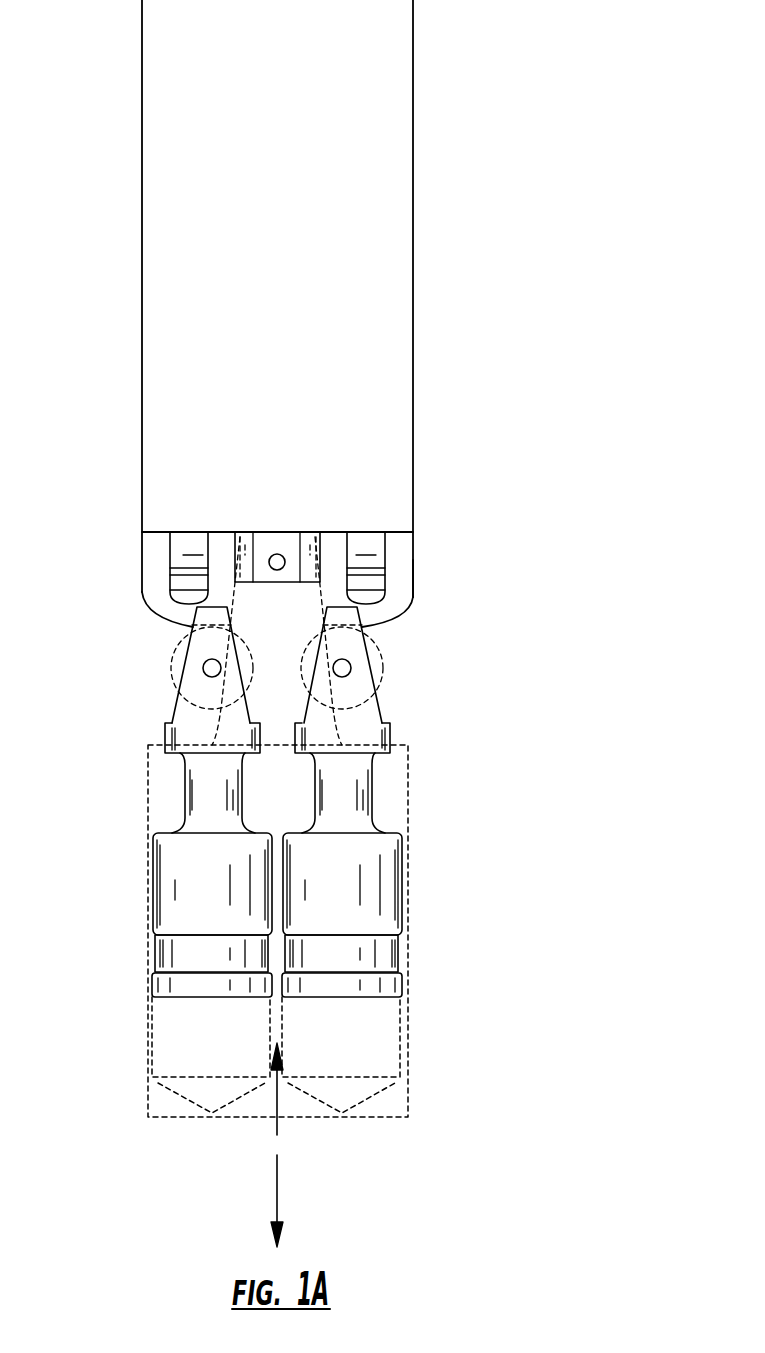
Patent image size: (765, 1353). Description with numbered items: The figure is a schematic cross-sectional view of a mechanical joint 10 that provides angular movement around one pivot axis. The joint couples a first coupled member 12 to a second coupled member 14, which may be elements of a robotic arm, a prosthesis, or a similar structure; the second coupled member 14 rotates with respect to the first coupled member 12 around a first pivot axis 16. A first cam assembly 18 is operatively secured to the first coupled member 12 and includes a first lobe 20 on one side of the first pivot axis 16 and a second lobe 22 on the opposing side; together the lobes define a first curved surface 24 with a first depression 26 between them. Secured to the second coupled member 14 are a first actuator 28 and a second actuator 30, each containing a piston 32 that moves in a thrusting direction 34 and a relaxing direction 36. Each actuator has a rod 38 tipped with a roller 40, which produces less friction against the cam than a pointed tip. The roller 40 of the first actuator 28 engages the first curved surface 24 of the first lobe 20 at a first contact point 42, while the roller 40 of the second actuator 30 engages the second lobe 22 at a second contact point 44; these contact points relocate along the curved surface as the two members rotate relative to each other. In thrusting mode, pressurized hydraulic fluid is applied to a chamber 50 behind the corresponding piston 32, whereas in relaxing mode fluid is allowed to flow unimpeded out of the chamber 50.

The mechanical joint 10 is at (551, 215).
The first coupled member 12 is at (142, 115).
The second coupled member 14 is at (148, 880).
The first pivot axis 16 is at (274, 555).
The first cam assembly 18 is at (142, 565).
The first lobe 20 is at (160, 613).
The second lobe 22 is at (413, 600).
The first curved surface 24 is at (380, 613).
The first depression 26 is at (285, 604).
The first actuator 28 is at (134, 990).
The second actuator 30 is at (419, 943).
The piston 32 is at (233, 972).
The thrusting direction 34 is at (275, 1105).
The relaxing direction 36 is at (278, 1185).
The rod 38 is at (230, 777).
The roller 40 is at (253, 670).
The first contact point 42 is at (204, 637).
The second contact point 44 is at (355, 639).
The chamber 50 is at (158, 1052).